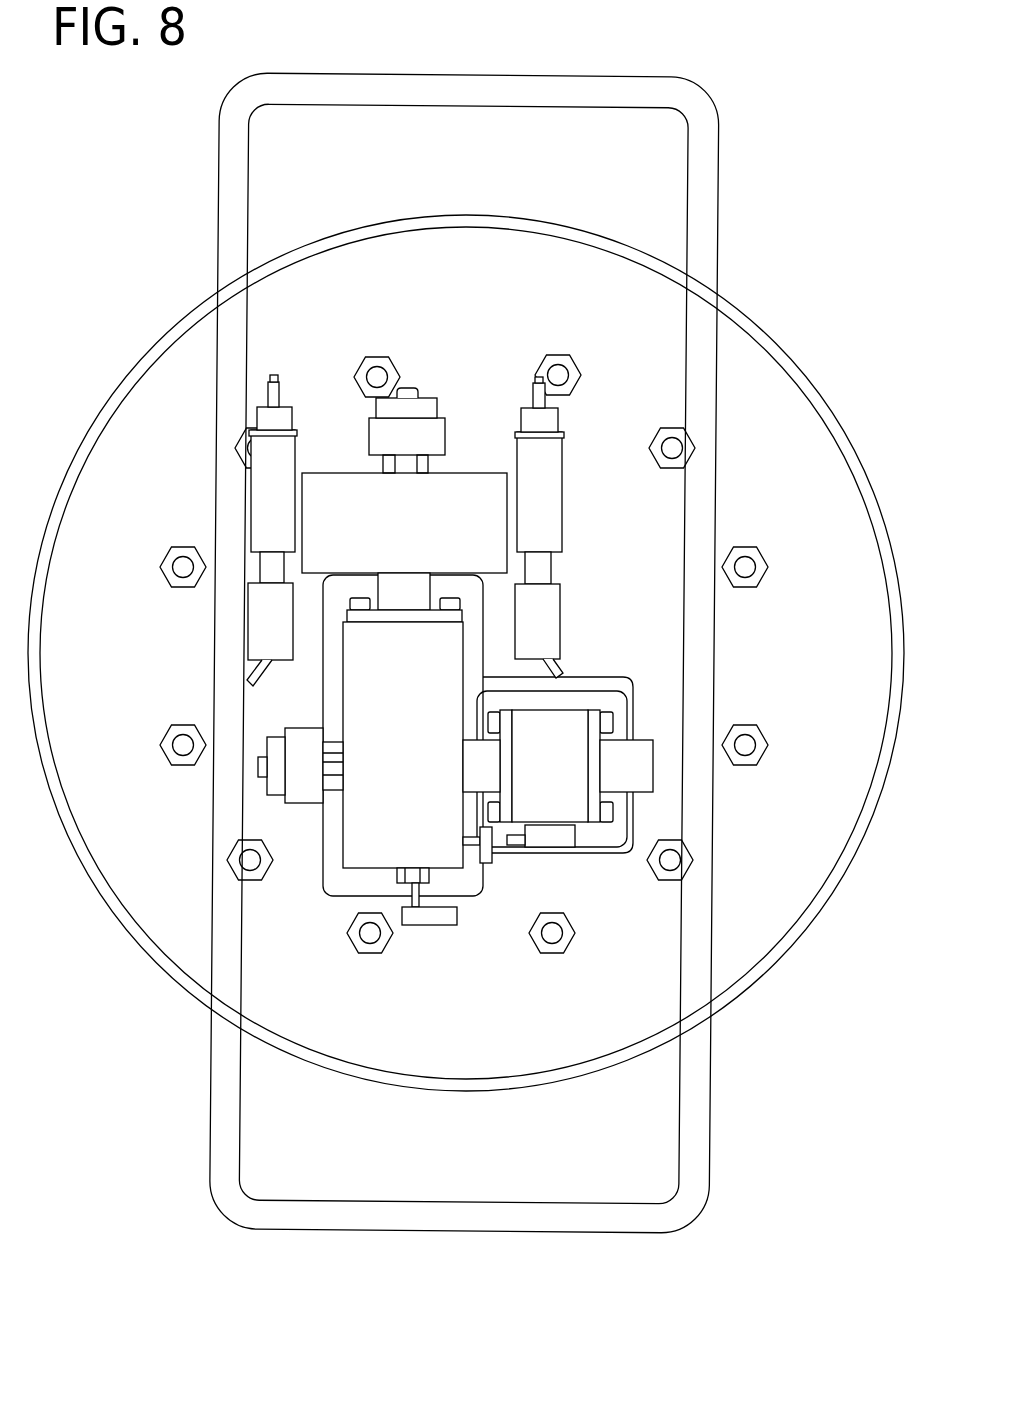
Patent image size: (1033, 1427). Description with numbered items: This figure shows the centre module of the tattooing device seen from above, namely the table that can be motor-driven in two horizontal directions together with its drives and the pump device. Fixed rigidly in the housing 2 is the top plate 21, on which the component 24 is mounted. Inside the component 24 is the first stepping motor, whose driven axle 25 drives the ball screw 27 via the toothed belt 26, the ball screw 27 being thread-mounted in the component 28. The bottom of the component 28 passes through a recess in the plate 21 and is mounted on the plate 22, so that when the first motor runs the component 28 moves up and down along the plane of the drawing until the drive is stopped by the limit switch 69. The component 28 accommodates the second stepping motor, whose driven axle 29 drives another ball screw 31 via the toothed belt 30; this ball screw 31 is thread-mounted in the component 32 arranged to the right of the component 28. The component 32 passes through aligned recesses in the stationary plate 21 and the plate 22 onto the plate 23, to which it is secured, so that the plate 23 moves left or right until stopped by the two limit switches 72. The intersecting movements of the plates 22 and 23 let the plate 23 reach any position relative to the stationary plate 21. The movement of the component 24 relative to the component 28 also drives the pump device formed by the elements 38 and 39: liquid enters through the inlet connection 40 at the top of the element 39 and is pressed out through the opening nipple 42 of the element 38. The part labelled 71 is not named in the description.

The housing 2 is at (110, 913).
The top plate 21 is at (197, 960).
The plate 22 is at (338, 880).
The bottom plate 23 is at (610, 832).
The component 24 is at (433, 548).
The driven axle 25 is at (456, 352).
The toothed belt 26 is at (383, 433).
The ball screw 27 is at (402, 597).
The component 28 is at (430, 703).
The driven axle 29 is at (258, 768).
The toothed belt 30 is at (303, 798).
The ball screw 31 is at (483, 753).
The component 32 is at (573, 792).
The element 38 is at (258, 495).
The element 39 is at (267, 620).
The inlet connection 40 is at (257, 674).
The opening nipple 42 is at (270, 378).
The limit switch 69 is at (442, 912).
The bracket 71 is at (490, 847).
The limit switches 72 is at (558, 837).